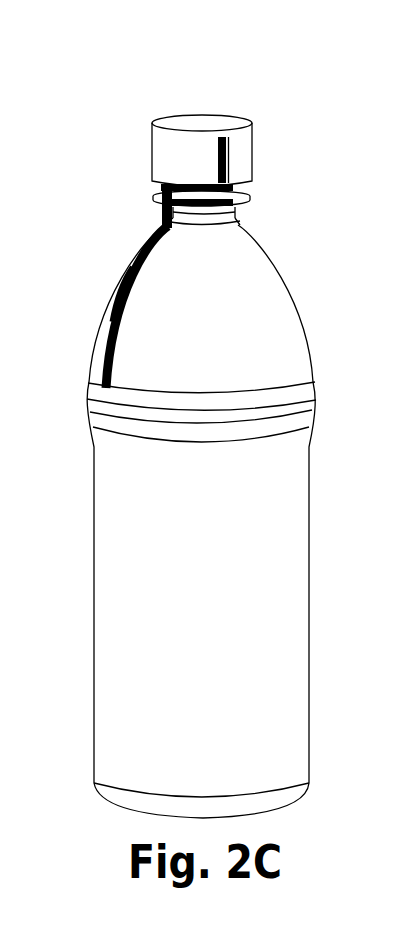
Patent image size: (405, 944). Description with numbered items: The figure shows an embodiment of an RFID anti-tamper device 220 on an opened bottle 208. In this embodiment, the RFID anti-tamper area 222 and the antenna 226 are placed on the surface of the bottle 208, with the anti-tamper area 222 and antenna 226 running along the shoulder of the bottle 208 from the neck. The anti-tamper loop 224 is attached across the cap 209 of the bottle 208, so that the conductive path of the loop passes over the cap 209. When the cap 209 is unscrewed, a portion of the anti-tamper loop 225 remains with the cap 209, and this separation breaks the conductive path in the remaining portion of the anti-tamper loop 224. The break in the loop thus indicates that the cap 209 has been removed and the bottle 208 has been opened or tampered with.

The bottle 208 is at (238, 613).
The cap 209 is at (238, 148).
The RFID anti-tamper device 220 is at (313, 117).
The RFID anti-tamper area 222 is at (132, 268).
The anti-tamper loop 224 is at (130, 290).
The portion of the anti-tamper loop 225 is at (218, 160).
The antenna 226 is at (106, 335).